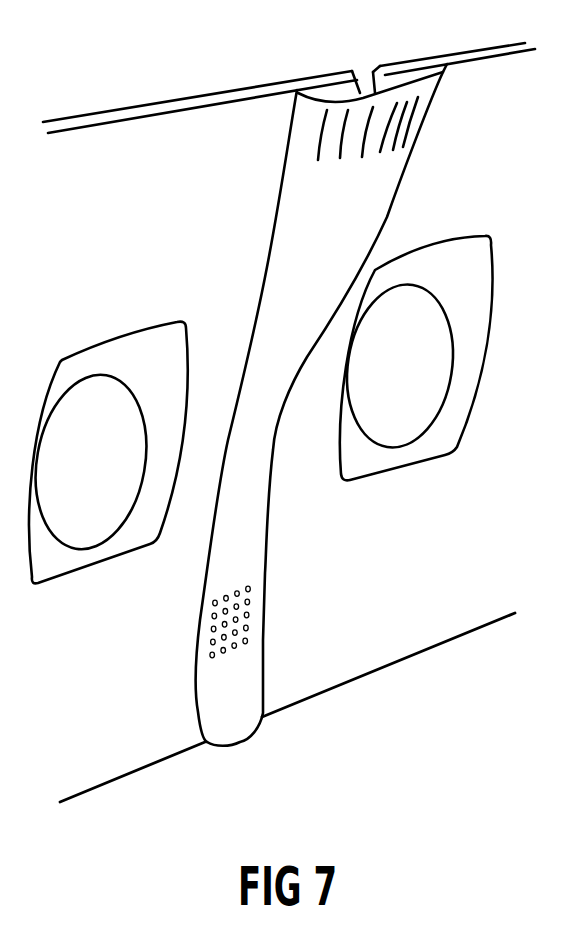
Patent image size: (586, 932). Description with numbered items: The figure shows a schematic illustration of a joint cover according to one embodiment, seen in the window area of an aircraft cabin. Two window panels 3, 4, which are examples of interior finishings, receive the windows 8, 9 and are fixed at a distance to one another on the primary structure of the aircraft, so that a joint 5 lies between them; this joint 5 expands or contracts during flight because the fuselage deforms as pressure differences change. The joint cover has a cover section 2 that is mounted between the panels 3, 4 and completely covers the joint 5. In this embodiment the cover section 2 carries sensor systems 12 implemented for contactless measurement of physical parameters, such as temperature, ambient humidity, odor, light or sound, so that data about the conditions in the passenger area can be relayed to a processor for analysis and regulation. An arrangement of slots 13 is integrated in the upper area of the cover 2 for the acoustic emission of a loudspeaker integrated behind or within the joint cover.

The cover section 2 is at (307, 203).
The window panel 3 is at (140, 745).
The window panel 4 is at (330, 668).
The joint 5 is at (367, 80).
The window 8 is at (93, 390).
The window 9 is at (402, 303).
The sensor system 12 is at (260, 617).
The slots 13 is at (393, 123).